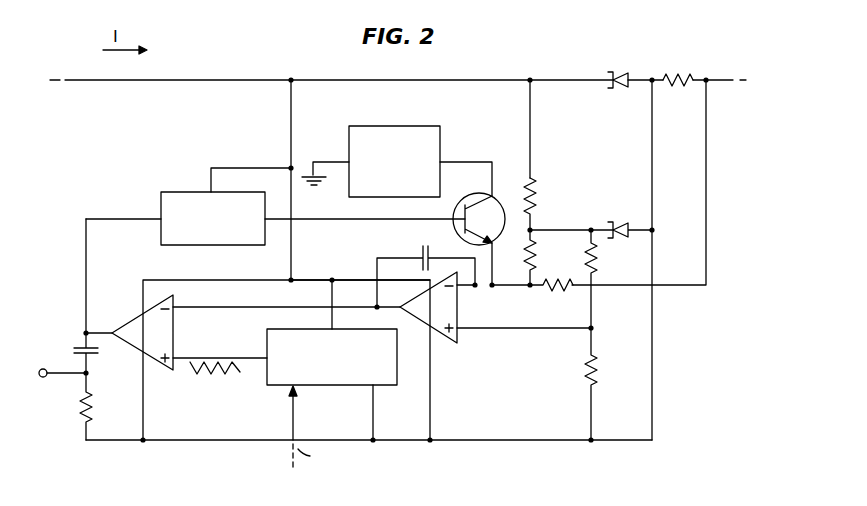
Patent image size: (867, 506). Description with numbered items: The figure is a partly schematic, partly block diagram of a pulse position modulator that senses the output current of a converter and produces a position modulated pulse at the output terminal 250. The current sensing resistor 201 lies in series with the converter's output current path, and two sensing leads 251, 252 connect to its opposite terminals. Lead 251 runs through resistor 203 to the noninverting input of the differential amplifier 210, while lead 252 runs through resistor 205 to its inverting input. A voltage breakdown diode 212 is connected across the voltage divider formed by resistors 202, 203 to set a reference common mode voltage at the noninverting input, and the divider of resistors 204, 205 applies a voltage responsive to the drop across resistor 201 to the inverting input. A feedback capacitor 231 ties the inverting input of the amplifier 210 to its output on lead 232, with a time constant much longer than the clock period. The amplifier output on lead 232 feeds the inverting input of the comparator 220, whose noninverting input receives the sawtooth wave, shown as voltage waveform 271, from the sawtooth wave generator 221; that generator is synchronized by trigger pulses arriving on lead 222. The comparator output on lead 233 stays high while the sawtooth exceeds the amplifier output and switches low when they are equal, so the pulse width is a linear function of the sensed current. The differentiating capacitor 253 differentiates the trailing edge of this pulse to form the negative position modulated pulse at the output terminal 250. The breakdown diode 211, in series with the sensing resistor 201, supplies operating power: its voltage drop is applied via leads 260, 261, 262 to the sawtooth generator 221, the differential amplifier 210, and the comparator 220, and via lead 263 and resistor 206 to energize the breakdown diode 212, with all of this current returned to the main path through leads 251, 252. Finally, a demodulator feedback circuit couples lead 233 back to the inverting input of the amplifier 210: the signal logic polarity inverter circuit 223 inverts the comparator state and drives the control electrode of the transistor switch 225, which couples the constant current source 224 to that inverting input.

The current sensing resistor 201 is at (679, 69).
The resistor 202 is at (598, 262).
The resistor 203 is at (610, 384).
The resistor 204 is at (549, 257).
The resistor 205 is at (557, 291).
The resistor 206 is at (549, 204).
The differential amplifier 210 is at (460, 307).
The breakdown diode 211 is at (620, 67).
The voltage breakdown diode 212 is at (591, 218).
The comparator 220 is at (175, 334).
The sawtooth wave generator 221 is at (318, 386).
The lead 222 is at (290, 450).
The signal logic polarity inverter circuit 223 is at (183, 192).
The constant current source 224 is at (377, 126).
The transistor switch 225 is at (470, 196).
The feedback capacitor 231 is at (426, 268).
The lead 232 is at (208, 306).
The lead 233 is at (99, 332).
The output terminal 250 is at (65, 404).
The sensing lead 251 is at (652, 137).
The sensing lead 252 is at (706, 137).
The differentiating capacitor 253 is at (78, 346).
The lead 260 is at (332, 297).
The lead 261 is at (353, 280).
The lead 262 is at (208, 279).
The lead 263 is at (530, 120).
The voltage waveform 271 is at (216, 374).